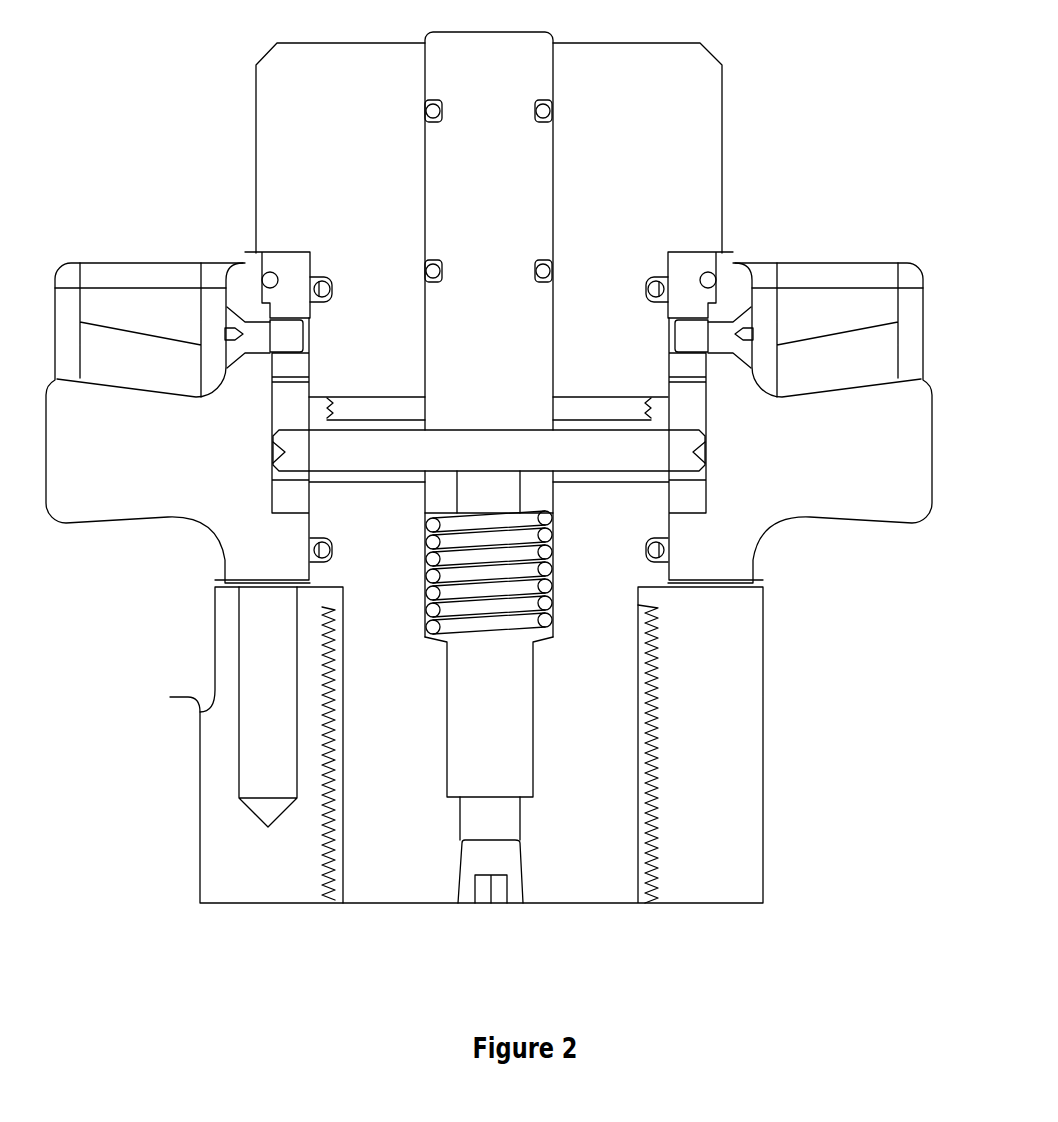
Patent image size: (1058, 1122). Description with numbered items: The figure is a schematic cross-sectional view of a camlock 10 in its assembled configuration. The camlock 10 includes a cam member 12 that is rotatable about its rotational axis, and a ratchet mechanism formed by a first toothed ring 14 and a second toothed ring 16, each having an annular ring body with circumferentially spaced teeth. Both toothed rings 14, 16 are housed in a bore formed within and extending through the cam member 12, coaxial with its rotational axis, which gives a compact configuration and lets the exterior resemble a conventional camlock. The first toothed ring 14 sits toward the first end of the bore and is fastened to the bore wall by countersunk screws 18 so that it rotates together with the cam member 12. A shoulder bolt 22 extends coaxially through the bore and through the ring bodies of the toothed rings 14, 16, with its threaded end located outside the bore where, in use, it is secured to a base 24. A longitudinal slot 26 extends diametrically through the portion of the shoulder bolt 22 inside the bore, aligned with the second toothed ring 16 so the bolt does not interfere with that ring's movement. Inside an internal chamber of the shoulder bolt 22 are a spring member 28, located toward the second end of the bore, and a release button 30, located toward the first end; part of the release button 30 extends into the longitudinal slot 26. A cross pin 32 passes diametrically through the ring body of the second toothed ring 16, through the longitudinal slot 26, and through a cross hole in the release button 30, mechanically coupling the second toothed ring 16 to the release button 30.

The camlock 10 is at (825, 115).
The cam member 12 is at (870, 275).
The first toothed ring 14 is at (290, 262).
The second toothed ring 16 is at (687, 485).
The countersunk screws 18 is at (263, 340).
The shoulder bolt 22 is at (642, 93).
The base 24 is at (732, 738).
The longitudinal slot 26 is at (633, 404).
The spring member 28 is at (445, 578).
The release button 30 is at (452, 157).
The cross pin 32 is at (318, 453).